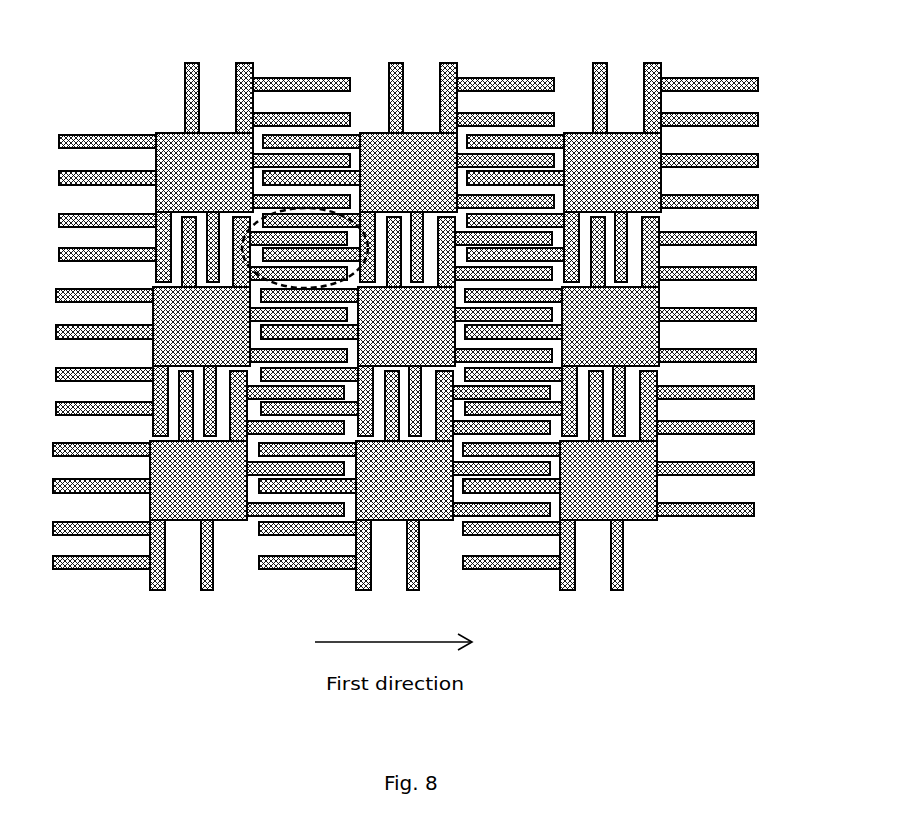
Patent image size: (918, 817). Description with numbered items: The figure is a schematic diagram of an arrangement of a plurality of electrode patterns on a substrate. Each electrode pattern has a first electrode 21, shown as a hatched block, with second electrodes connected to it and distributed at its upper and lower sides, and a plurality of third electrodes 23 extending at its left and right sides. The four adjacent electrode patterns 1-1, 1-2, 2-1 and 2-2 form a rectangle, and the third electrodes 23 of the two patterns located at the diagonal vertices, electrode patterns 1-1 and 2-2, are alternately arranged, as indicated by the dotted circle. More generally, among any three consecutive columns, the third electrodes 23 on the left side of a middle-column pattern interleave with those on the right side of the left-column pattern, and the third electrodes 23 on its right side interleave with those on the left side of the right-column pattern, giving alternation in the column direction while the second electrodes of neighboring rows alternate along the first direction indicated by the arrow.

The first electrode 21 is at (600, 152).
The third electrodes 23 is at (252, 212).
The electrode pattern 1-1 is at (204, 172).
The electrode pattern 1-2 is at (408, 172).
The electrode pattern 2-1 is at (201, 326).
The electrode pattern 2-2 is at (406, 326).